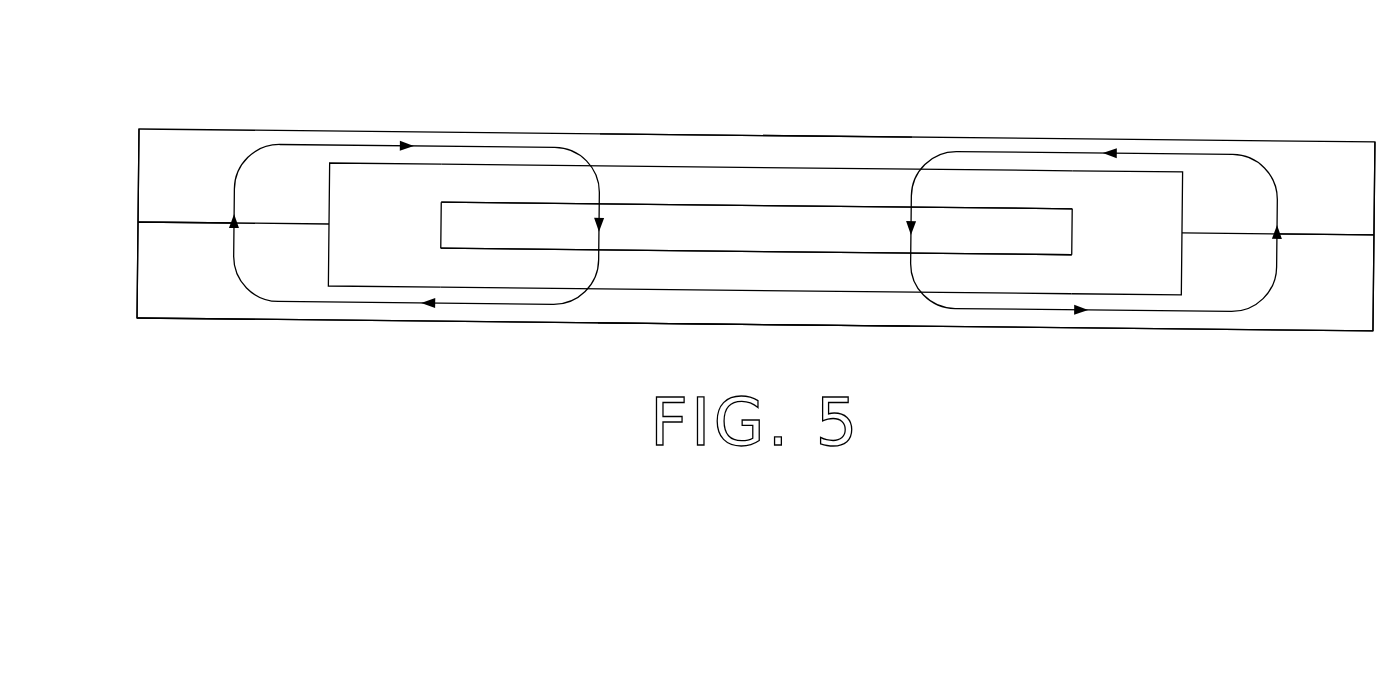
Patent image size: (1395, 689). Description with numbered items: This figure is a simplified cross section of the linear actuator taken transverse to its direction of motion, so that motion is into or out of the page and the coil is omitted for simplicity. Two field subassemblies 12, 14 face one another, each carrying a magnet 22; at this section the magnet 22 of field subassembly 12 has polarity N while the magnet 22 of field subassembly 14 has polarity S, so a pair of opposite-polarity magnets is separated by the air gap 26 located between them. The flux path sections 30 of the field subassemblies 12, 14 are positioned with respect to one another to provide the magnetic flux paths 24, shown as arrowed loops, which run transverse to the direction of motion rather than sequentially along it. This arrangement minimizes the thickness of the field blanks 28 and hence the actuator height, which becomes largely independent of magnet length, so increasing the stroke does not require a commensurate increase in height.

The field subassembly 12 is at (830, 135).
The field subassembly 14 is at (592, 322).
The magnet 22 is at (838, 200).
The magnetic flux path 24 is at (333, 300).
The air gap 26 is at (709, 235).
The field blank 28 is at (732, 148).
The flux path section 30 is at (167, 145).